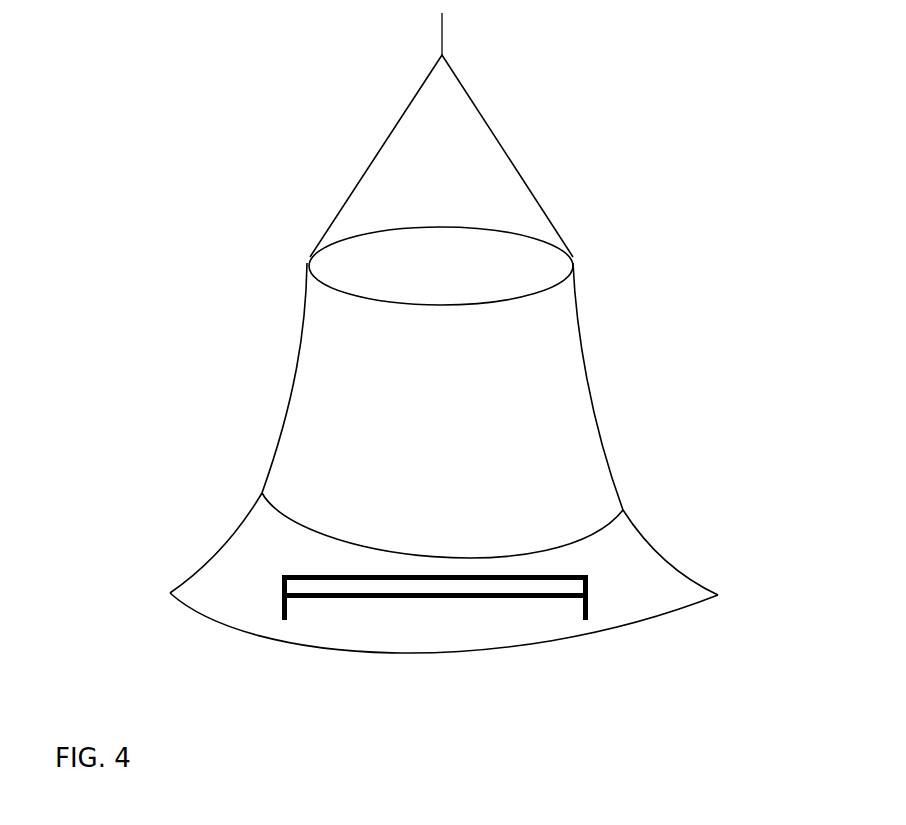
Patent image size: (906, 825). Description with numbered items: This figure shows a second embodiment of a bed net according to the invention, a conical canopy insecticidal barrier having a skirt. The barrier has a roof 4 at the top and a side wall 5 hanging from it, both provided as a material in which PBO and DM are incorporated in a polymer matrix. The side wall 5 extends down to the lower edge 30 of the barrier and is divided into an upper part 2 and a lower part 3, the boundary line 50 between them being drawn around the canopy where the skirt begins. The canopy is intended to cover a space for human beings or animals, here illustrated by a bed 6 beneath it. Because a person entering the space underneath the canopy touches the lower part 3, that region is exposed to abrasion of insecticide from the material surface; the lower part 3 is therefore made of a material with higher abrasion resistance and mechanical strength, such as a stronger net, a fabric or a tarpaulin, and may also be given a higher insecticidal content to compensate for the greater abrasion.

The upper part 2 is at (572, 465).
The lower part 3 is at (633, 568).
The roof 4 is at (485, 172).
The side wall 5 is at (325, 347).
The bed 6 is at (307, 588).
The lower edge 30 is at (643, 620).
The lower seam line 50 is at (587, 493).